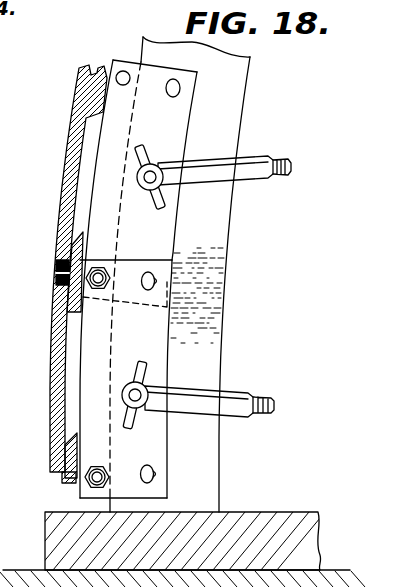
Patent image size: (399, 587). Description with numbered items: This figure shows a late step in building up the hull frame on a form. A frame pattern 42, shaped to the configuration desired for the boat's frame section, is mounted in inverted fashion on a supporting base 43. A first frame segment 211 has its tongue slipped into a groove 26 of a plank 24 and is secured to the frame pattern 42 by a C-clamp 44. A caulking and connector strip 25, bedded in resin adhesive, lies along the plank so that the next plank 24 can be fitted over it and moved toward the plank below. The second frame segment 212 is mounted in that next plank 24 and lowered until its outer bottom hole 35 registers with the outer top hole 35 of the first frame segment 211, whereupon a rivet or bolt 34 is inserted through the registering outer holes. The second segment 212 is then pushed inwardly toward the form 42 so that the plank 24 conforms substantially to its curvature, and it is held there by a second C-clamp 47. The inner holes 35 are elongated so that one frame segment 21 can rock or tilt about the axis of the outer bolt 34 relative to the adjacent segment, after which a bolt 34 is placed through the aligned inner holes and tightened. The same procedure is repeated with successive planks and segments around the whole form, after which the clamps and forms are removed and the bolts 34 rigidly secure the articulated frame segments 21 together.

The frame pattern 42 is at (225, 328).
The frame segment 21 is at (101, 279).
The second frame segment 212 is at (97, 136).
The first frame segment 211 is at (75, 410).
The hole 35 is at (232, 478).
The rivet or bolt 34 is at (95, 283).
The plank 24 is at (52, 375).
The caulking and connector strip 25 is at (58, 268).
The groove 26 is at (12, 76).
The C-clamp 47 is at (284, 153).
The C-clamp 44 is at (268, 401).
The supporting base 43 is at (287, 513).